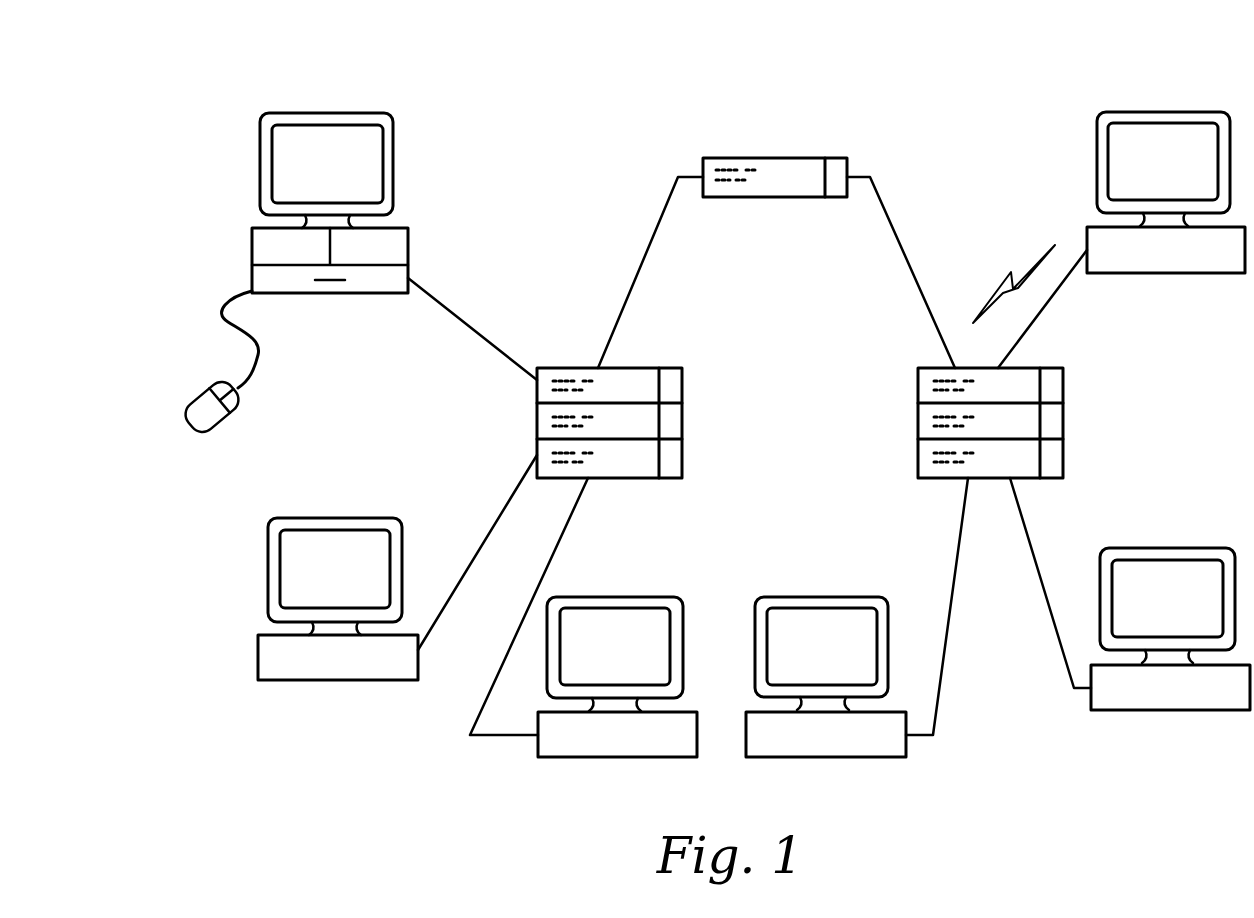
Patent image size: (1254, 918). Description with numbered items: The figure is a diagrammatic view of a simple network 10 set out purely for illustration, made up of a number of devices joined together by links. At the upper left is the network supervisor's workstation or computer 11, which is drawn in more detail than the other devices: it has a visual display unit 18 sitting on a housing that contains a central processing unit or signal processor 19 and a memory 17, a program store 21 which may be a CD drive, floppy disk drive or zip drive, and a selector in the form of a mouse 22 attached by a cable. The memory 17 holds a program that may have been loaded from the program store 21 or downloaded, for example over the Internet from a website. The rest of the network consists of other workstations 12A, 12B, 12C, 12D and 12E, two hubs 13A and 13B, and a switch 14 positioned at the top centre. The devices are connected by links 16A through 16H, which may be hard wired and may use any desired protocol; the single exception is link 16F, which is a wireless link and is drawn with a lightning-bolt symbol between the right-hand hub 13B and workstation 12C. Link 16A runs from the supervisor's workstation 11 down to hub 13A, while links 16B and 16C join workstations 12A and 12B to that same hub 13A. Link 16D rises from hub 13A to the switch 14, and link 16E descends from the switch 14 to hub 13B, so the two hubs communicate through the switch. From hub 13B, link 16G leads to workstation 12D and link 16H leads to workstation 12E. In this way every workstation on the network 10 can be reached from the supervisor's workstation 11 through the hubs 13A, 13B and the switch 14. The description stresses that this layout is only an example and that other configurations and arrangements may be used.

The network 10 is at (631, 98).
The network supervisor's workstation 11 is at (305, 250).
The computer 12A is at (242, 667).
The workstation 12B is at (533, 755).
The workstation 12C is at (1073, 160).
The workstation 12D is at (756, 588).
The workstation 12E is at (1081, 717).
The hub 13A is at (699, 380).
The hub 13B is at (1069, 406).
The switch 14 is at (775, 158).
The link 16A is at (482, 333).
The link 16B is at (497, 513).
The link 16C is at (560, 546).
The link 16D is at (630, 293).
The link 16E is at (910, 252).
The wireless link 16F is at (1053, 295).
The link 16G is at (953, 568).
The link 16H is at (1035, 556).
The memory 17 is at (409, 243).
The visual display unit 18 is at (396, 128).
The central processing unit or signal processor 19 is at (252, 243).
The program store 21 is at (386, 294).
The mouse 22 is at (197, 403).